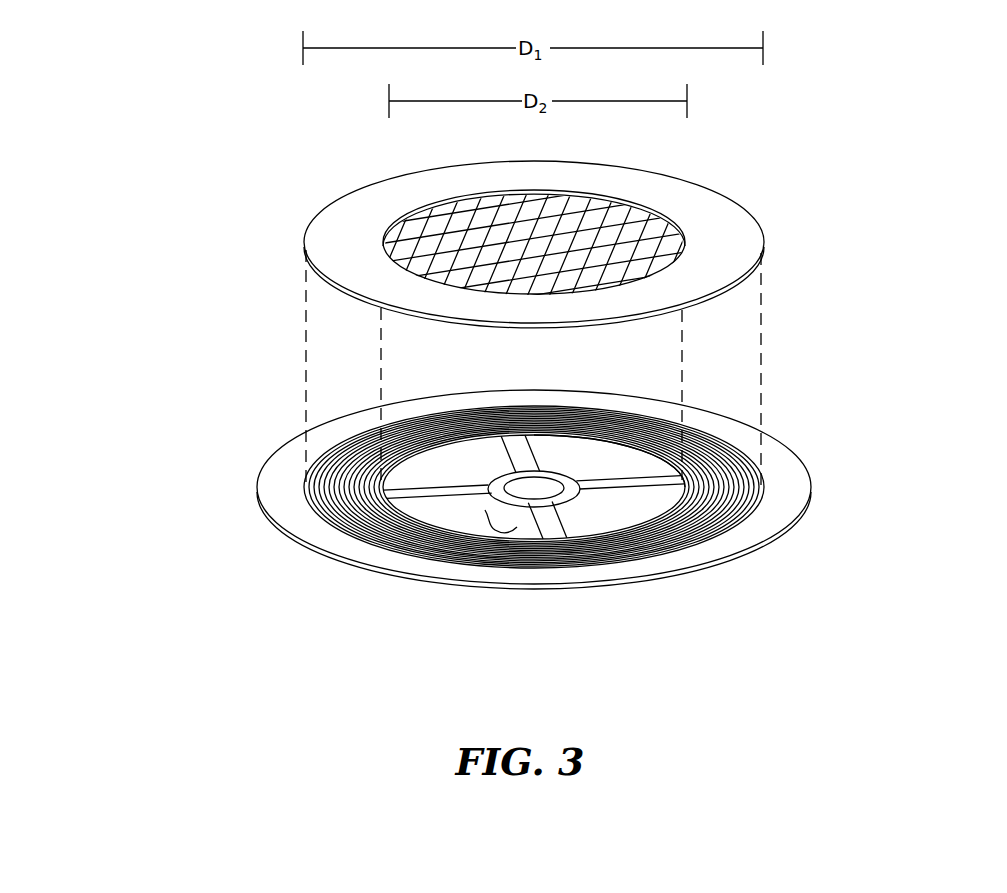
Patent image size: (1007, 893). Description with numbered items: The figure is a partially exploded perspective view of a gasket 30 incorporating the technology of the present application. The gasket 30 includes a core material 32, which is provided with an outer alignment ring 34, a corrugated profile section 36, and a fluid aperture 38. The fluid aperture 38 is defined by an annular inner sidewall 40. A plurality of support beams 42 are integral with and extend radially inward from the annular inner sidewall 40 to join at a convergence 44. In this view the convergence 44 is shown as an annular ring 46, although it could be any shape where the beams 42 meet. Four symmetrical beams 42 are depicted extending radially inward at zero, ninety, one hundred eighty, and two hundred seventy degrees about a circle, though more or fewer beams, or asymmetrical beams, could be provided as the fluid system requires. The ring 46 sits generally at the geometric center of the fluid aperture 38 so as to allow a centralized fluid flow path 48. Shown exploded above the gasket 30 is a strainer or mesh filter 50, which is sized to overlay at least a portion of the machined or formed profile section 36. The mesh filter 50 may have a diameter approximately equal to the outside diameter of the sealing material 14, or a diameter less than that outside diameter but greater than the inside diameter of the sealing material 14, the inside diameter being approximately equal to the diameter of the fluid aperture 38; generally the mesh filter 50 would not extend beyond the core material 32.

The sealing material 14 is at (730, 288).
The gasket 30 is at (938, 253).
The core material 32 is at (792, 532).
The outer alignment ring 34 is at (783, 470).
The corrugated profile section 36 is at (737, 467).
The fluid aperture 38 is at (602, 467).
The annular inner sidewall 40 is at (570, 440).
The support beams 42 is at (457, 487).
The convergence 44 is at (497, 518).
The annular ring 46 is at (567, 495).
The centralized fluid flow path 48 is at (533, 492).
The mesh filter 50 is at (628, 223).